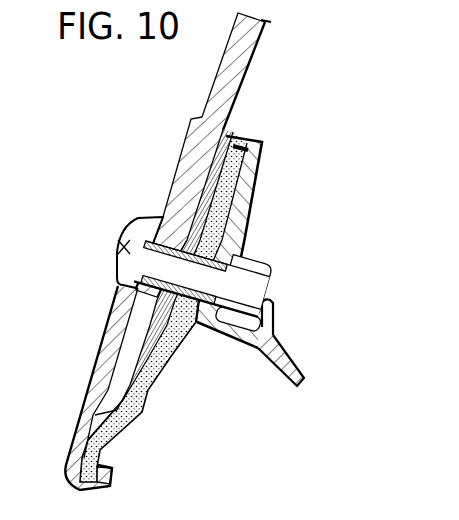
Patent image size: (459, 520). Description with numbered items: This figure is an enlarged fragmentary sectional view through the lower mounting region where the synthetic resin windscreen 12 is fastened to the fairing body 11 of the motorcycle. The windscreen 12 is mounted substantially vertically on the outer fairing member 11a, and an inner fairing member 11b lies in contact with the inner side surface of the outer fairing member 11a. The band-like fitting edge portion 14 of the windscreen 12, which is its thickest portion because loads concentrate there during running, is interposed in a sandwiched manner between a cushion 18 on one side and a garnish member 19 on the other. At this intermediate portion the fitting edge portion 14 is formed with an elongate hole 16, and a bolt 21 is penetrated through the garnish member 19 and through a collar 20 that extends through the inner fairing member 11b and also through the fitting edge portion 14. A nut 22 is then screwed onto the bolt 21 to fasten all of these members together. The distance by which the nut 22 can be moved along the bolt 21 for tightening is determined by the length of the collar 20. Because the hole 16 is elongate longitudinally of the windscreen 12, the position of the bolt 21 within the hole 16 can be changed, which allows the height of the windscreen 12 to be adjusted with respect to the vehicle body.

The fairing body 11 is at (250, 236).
The outer fairing member 11a is at (140, 417).
The inner fairing member 11b is at (280, 349).
The synthetic resin windscreen 12 is at (255, 63).
The fitting edge portion 14 is at (190, 198).
The elongate hole 16 is at (138, 322).
The cushion 18 is at (160, 365).
The garnish member 19 is at (110, 342).
The collar 20 is at (198, 325).
The bolt 21 is at (153, 257).
The nut 22 is at (258, 273).